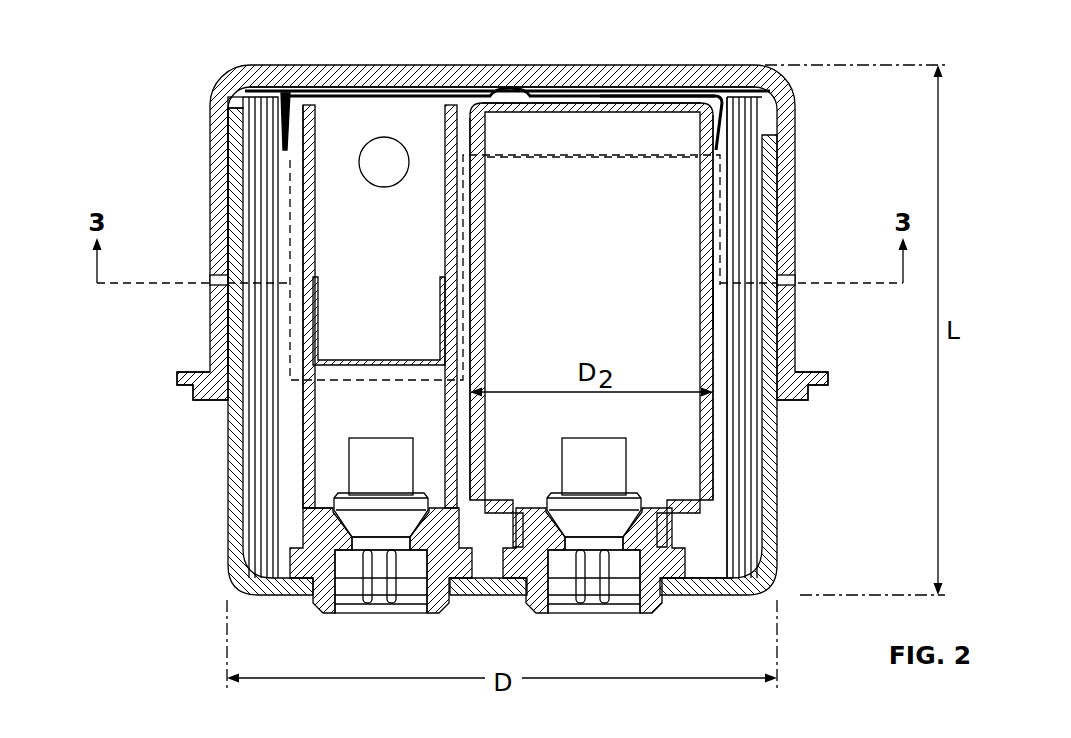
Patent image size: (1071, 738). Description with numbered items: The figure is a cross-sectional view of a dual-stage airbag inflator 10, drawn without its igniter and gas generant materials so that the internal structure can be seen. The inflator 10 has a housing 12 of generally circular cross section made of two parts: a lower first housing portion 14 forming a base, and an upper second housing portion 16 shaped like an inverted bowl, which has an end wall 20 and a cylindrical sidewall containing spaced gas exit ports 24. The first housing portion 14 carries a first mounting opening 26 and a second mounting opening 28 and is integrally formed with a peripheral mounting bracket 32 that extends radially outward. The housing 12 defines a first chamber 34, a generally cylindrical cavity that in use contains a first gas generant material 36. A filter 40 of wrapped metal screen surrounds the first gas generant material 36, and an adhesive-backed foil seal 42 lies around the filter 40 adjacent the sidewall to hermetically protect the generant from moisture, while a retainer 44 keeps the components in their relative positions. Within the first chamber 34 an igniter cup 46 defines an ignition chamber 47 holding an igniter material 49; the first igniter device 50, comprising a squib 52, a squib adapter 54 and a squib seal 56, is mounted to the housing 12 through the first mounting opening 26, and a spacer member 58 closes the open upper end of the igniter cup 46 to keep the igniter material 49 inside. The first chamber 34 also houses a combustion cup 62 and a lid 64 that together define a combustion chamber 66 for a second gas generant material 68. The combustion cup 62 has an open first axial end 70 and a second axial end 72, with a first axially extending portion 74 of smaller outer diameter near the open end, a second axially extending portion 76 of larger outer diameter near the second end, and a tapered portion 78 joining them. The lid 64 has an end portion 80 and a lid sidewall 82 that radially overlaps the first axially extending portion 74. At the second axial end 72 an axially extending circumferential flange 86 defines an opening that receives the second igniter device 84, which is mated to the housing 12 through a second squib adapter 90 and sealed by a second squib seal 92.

The inflator 10 is at (132, 55).
The housing 12 is at (206, 180).
The first housing portion 14 is at (238, 560).
The second housing portion 16 is at (224, 192).
The end wall 20 is at (340, 80).
The gas exit ports 24 is at (218, 284).
The first mounting opening 26 is at (330, 612).
The second mounting opening 28 is at (302, 238).
The peripheral mounting bracket 32 is at (180, 382).
The first chamber 34 is at (228, 103).
The first gas generant material 36 is at (384, 93).
The filter 40 is at (258, 520).
The adhesive-backed foil seal 42 is at (238, 308).
The retainer 44 is at (556, 88).
The igniter cup 46 is at (290, 468).
The ignition chamber 47 is at (380, 266).
The igniter material 49 is at (310, 495).
The first igniter device 50 is at (372, 630).
The squib 52 is at (335, 515).
The squib adapter 54 is at (452, 585).
The squib seal 56 is at (322, 582).
The spacer member 58 is at (303, 195).
The combustion cup 62 is at (724, 368).
The lid 64 is at (645, 90).
The combustion chamber 66 is at (680, 444).
The second gas generant material 68 is at (757, 480).
The first axial end 70 is at (697, 95).
The second axial end 72 is at (703, 592).
The first axially extending portion 74 is at (708, 207).
The second axially extending portion 76 is at (752, 452).
The tapered portion 78 is at (718, 290).
The end portion 80 is at (552, 110).
The lid sidewall 82 is at (478, 207).
The second igniter device 84 is at (638, 630).
The axially extending circumferential flange 86 is at (508, 530).
The second squib adapter 90 is at (655, 600).
The second squib seal 92 is at (748, 572).